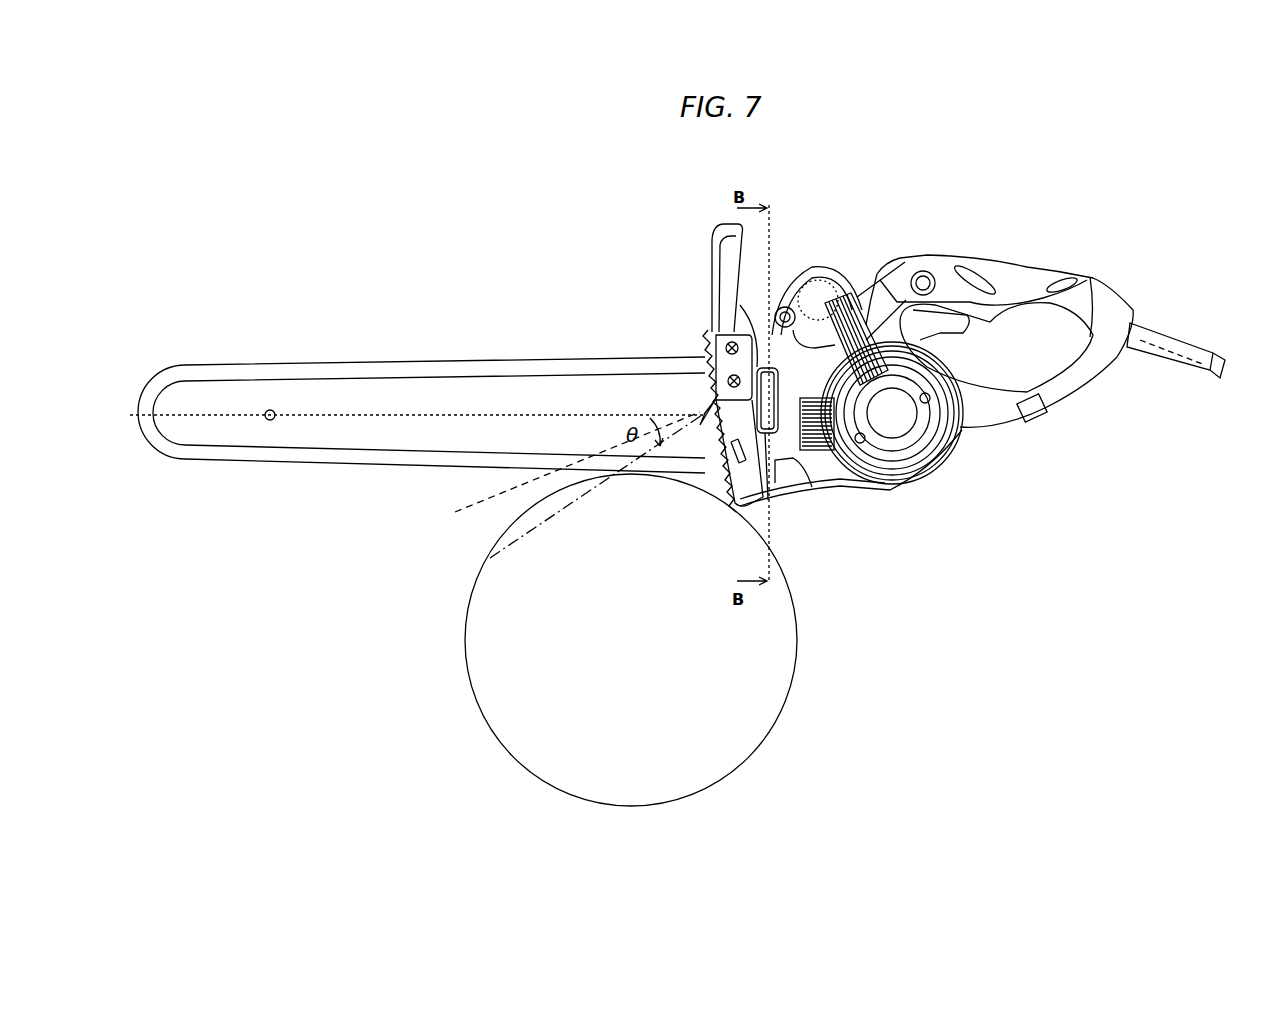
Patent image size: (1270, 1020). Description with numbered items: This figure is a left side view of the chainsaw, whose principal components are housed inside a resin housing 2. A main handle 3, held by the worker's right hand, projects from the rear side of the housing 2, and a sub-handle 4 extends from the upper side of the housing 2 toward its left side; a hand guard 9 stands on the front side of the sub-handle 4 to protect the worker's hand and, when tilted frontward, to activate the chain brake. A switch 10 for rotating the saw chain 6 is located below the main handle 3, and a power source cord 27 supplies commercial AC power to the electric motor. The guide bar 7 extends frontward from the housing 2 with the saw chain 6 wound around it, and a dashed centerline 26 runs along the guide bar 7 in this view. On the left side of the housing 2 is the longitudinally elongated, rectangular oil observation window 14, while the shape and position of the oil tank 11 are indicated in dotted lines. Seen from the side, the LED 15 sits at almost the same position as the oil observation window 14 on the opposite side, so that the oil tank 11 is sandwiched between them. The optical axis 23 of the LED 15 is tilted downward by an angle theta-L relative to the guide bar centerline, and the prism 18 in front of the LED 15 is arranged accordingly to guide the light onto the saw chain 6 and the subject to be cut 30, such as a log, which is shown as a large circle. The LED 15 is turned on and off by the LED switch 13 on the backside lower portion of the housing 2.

The housing 2 is at (832, 477).
The main handle 3 is at (1015, 266).
The sub-handle 4 is at (845, 306).
The saw chain 6 is at (220, 366).
The guide bar 7 is at (300, 397).
The hand guard 9 is at (722, 232).
The switch 10 is at (996, 347).
The oil tank 11 is at (790, 463).
The LED switch 13 is at (1036, 419).
The oil observation window 14 is at (770, 331).
The LED 15 is at (770, 490).
The prism 18 is at (702, 398).
The optical axis 23 is at (545, 513).
The bar center line 26 is at (513, 414).
The power source cord 27 is at (1222, 357).
The subject to be cut 30 is at (465, 632).